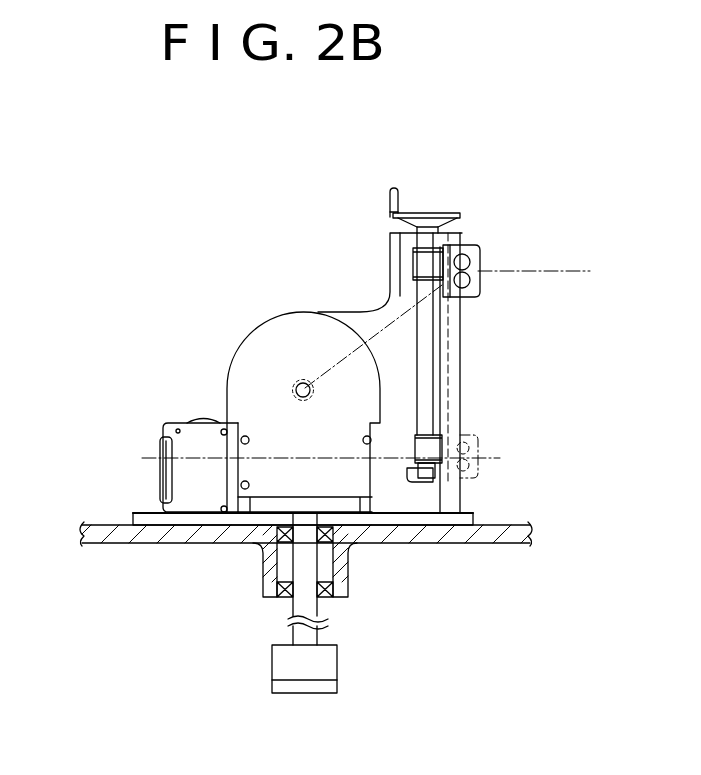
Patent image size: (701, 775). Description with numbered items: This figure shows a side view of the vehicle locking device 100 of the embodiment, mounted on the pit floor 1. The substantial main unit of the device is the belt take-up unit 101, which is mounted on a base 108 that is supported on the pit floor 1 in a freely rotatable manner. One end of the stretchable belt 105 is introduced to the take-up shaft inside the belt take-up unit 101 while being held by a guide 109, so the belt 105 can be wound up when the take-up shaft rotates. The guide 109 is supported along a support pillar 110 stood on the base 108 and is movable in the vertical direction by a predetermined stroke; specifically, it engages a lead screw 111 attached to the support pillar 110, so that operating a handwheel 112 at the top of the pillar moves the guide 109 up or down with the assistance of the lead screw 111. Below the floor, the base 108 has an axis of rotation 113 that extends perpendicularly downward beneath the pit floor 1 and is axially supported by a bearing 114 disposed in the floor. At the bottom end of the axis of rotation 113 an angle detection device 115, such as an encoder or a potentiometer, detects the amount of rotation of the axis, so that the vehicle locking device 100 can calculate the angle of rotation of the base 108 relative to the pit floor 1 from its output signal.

The pit floor 1 is at (110, 525).
The vehicle locking device 100 is at (225, 282).
The belt take-up unit 101 is at (228, 362).
The belt 105 is at (552, 271).
The base 108 is at (145, 513).
The guide 109 is at (477, 250).
The support pillar 110 is at (462, 340).
The lead screw 111 is at (430, 400).
The handwheel 112 is at (407, 200).
The axis of rotation 113 is at (302, 568).
The bearing 114 is at (277, 533).
The angle detection device 115 is at (338, 658).